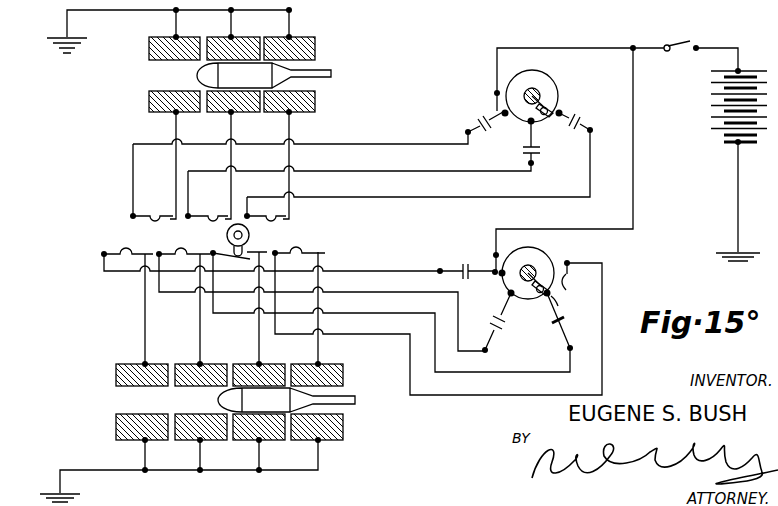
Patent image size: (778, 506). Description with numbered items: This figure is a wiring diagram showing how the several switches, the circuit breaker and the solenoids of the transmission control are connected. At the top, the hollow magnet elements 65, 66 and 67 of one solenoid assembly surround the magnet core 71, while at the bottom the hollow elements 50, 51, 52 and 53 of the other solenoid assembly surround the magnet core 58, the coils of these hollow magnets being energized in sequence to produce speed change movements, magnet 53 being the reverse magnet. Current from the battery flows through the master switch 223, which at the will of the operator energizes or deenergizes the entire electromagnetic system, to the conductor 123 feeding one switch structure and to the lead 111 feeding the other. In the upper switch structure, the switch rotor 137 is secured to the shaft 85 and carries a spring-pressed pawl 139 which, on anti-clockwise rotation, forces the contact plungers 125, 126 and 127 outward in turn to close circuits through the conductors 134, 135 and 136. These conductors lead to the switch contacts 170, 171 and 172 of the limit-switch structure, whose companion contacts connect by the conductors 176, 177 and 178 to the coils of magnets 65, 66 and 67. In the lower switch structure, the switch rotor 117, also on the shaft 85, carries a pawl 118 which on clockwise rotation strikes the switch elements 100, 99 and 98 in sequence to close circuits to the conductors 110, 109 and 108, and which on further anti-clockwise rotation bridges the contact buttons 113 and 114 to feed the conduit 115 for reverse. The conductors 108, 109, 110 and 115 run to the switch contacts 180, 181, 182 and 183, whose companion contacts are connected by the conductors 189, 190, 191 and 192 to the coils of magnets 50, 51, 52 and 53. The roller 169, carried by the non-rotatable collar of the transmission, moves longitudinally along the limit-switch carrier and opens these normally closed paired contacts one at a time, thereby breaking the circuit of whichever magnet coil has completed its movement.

The hollow element 50 is at (122, 425).
The hollow element 51 is at (196, 418).
The hollow element 52 is at (250, 433).
The reverse magnet 53 is at (341, 435).
The magnet core 58 is at (286, 400).
The hollow element 65 is at (152, 51).
The hollow element 66 is at (211, 52).
The hollow element 67 is at (316, 53).
The magnet core 71 is at (264, 75).
The shaft 85 is at (538, 88).
The switch element 98 is at (479, 275).
The switch element 99 is at (503, 320).
The switch element 100 is at (556, 326).
The conductor 108 is at (400, 271).
The conductor 109 is at (398, 293).
The conductor 110 is at (394, 314).
The lead 111 is at (634, 153).
The contact button 113 is at (557, 298).
The companion button 114 is at (566, 282).
The conduit 115 is at (371, 334).
The switch rotor 117 is at (544, 256).
The pawl 118 is at (549, 270).
The conductor 123 is at (606, 48).
The contact plunger 125 is at (494, 114).
The contact plunger 126 is at (523, 148).
The contact plunger 127 is at (572, 129).
The conductor 134 is at (397, 137).
The conductor 135 is at (410, 170).
The conductor 136 is at (412, 196).
The switch rotor 137 is at (552, 87).
The pawl 139 is at (554, 109).
The roller 169 is at (250, 235).
The switch contact 170 is at (159, 211).
The switch contact 171 is at (215, 211).
The switch contact 172 is at (273, 211).
The conductor 176 is at (175, 132).
The conductor 177 is at (231, 132).
The conductor 178 is at (289, 132).
The switch contact 180 is at (106, 253).
The switch contact 181 is at (166, 246).
The switch contact 182 is at (227, 251).
The switch contact 183 is at (285, 249).
The conductor 189 is at (144, 347).
The conductor 190 is at (199, 347).
The conductor 191 is at (258, 347).
The conductor 192 is at (317, 352).
The master switch 223 is at (690, 45).